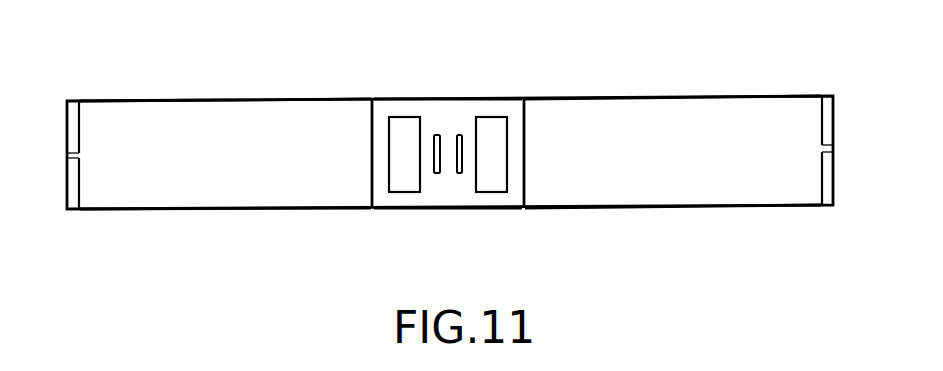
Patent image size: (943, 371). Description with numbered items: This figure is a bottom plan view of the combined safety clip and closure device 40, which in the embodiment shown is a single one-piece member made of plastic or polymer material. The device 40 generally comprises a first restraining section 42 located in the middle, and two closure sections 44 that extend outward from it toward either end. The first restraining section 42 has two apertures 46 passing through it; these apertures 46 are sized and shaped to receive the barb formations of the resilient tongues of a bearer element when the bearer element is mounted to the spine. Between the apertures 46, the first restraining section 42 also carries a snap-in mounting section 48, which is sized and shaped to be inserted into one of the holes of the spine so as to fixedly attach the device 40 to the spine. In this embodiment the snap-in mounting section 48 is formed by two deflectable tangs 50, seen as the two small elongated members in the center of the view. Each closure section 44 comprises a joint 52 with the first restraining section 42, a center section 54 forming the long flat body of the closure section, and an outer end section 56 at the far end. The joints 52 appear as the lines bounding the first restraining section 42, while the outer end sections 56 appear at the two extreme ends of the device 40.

The combined safety clip and closure device 40 is at (100, 36).
The first restraining section 42 is at (425, 200).
The closure sections 44 is at (257, 100).
The apertures 46 is at (403, 177).
The snap-in mounting section 48 is at (440, 145).
The deflectable tangs 50 is at (459, 175).
The joint 52 is at (374, 114).
The center section 54 is at (174, 208).
The outer end section 56 is at (72, 198).